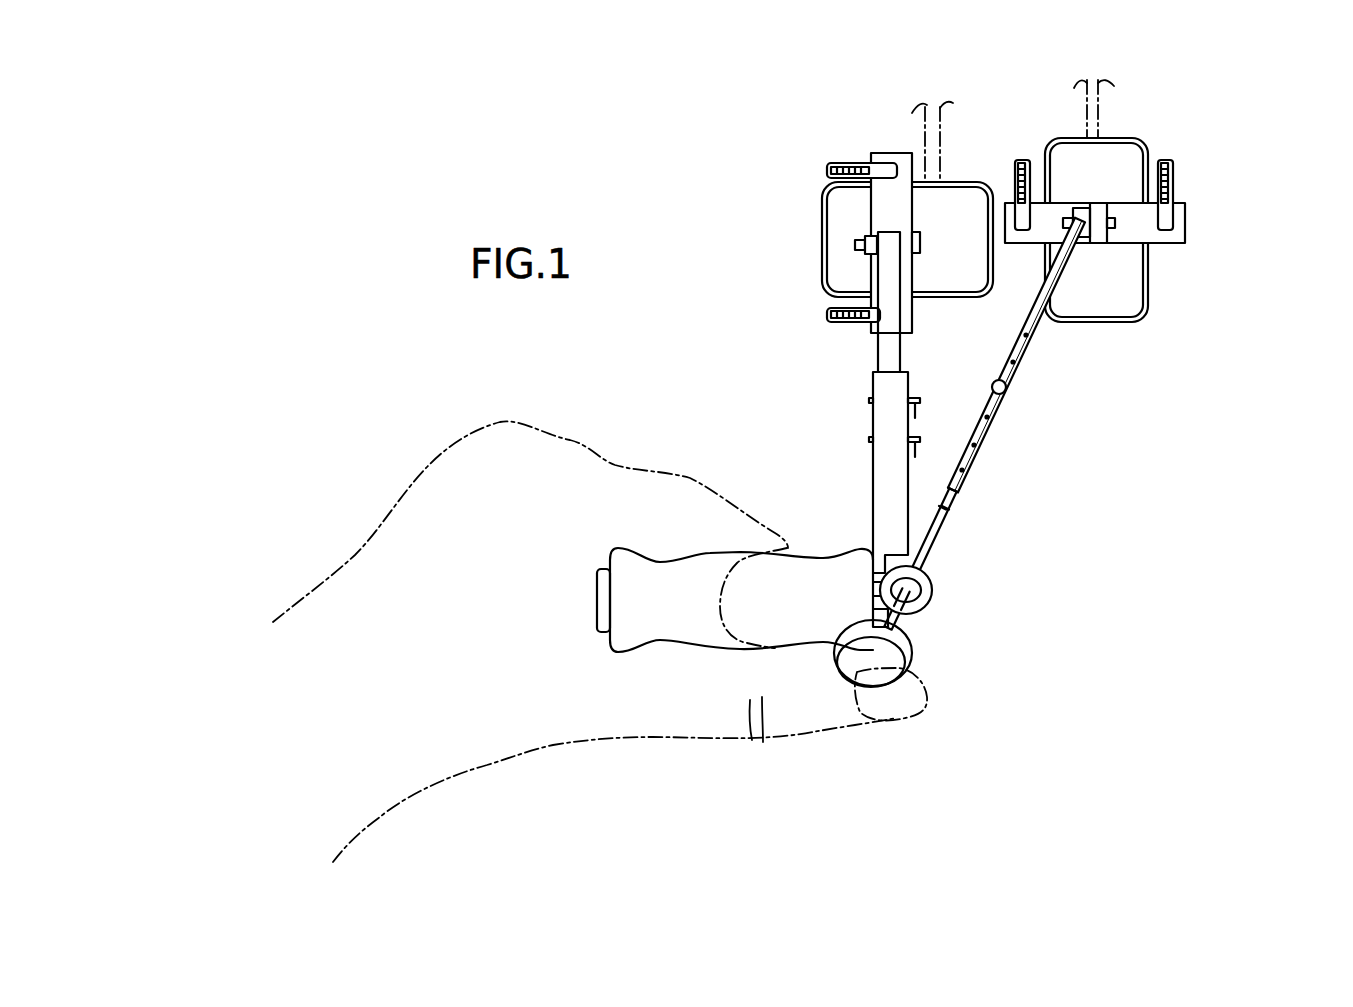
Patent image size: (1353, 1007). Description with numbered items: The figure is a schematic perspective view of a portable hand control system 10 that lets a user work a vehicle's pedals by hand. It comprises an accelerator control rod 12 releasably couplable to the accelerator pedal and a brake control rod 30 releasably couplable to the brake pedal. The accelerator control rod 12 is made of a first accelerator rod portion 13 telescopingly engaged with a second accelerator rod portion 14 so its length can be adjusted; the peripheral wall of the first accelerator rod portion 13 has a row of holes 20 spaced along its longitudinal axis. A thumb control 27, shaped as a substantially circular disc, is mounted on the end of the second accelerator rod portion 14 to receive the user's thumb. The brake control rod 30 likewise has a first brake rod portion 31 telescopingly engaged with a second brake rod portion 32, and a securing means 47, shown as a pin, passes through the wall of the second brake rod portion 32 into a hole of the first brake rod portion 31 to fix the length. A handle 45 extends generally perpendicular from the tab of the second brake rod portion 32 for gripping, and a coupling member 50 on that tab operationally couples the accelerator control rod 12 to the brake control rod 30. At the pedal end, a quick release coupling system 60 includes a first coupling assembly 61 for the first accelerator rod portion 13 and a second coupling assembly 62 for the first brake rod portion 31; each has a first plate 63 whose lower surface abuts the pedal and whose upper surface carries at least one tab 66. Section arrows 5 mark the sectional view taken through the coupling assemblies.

The section line 5 is at (1117, 132).
The portable hand control system 10 is at (1112, 537).
The accelerator control rod 12 is at (1033, 335).
The first accelerator rod portion 13 is at (958, 492).
The second accelerator rod portion 14 is at (931, 542).
The holes 20 is at (973, 458).
The thumb control 27 is at (880, 673).
The brake control rod 30 is at (892, 487).
The first brake rod portion 31 is at (890, 347).
The second brake rod portion 32 is at (888, 387).
The handle 45 is at (760, 612).
The securing means 47 is at (870, 440).
The coupling member 50 is at (930, 594).
The quick release coupling system 60 is at (1045, 213).
The first coupling assembly 61 is at (1203, 214).
The second coupling assembly 62 is at (812, 158).
The first plate 63 is at (853, 219).
The tab 66 is at (870, 256).